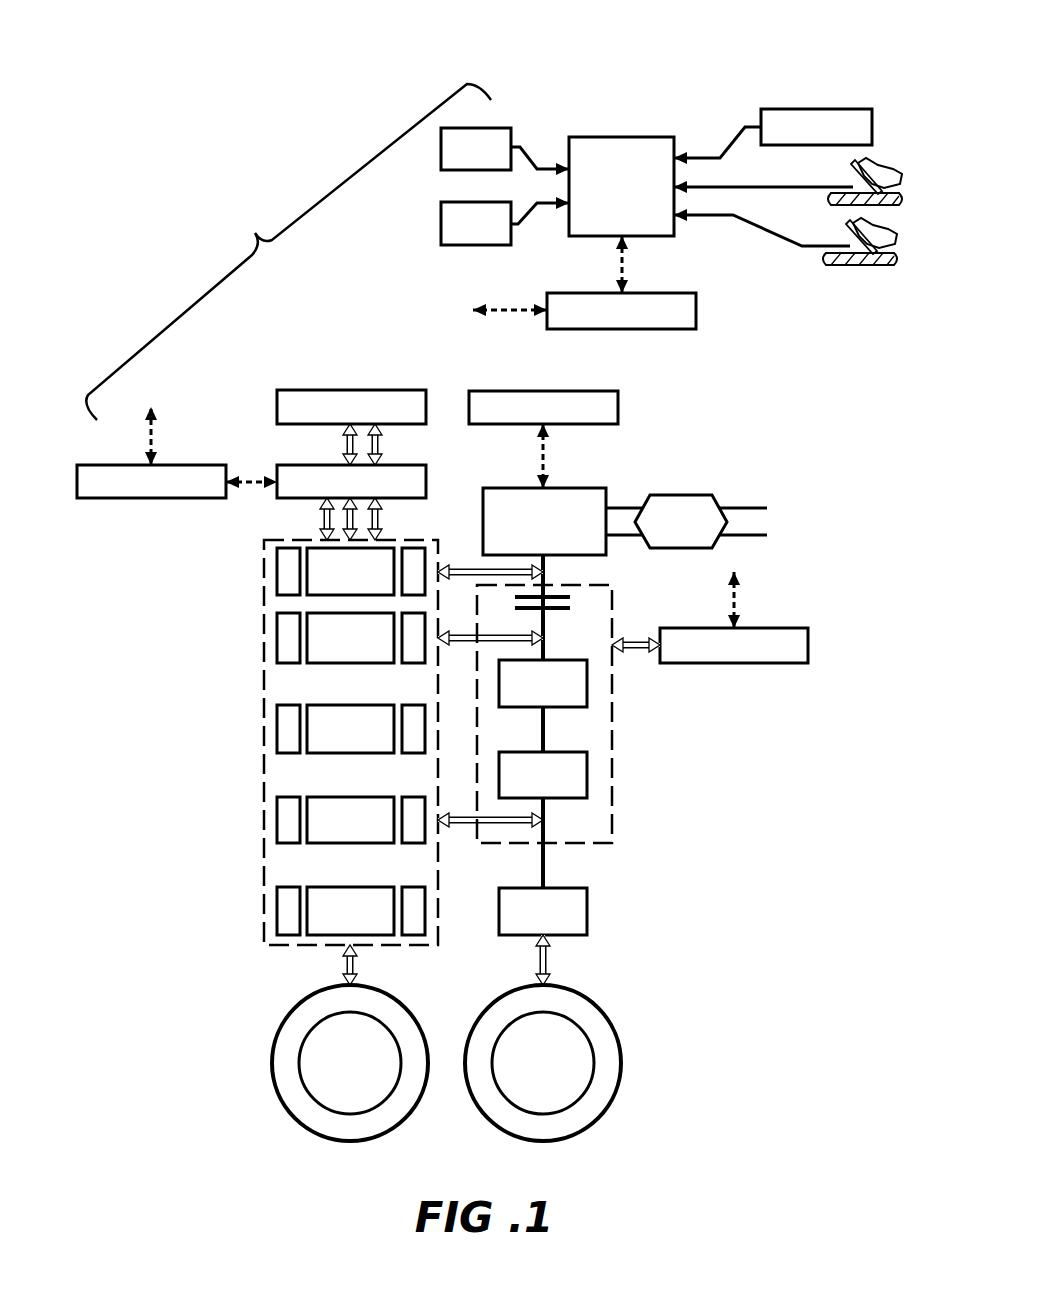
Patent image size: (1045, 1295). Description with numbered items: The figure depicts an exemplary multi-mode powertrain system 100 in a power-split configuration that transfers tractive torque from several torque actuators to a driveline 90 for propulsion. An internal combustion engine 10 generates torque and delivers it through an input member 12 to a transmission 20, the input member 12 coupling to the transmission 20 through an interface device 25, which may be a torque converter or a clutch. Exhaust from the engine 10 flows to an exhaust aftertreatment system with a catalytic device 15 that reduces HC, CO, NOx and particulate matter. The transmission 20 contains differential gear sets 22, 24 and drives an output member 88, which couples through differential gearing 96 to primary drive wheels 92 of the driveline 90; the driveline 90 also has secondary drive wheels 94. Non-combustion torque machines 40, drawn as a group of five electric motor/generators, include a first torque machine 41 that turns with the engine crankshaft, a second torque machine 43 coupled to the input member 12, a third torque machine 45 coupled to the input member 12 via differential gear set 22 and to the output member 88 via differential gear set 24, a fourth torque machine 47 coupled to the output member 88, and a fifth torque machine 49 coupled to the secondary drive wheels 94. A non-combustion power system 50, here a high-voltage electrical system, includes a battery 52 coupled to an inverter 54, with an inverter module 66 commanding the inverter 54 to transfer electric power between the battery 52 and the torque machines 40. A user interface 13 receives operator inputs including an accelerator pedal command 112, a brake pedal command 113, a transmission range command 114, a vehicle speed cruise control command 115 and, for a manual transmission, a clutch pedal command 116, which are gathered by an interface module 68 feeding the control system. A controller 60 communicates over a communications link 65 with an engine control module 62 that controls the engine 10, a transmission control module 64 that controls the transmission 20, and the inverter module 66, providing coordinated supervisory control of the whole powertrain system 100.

The multi-mode powertrain system 100 is at (223, 205).
The user interface 13 is at (826, 80).
The transmission range command 114 is at (792, 141).
The brake pedal command 113 is at (788, 176).
The accelerator pedal command 112 is at (785, 233).
The vehicle speed cruise control command 115 is at (452, 162).
The clutch pedal command 116 is at (452, 237).
The operator interface module 68 is at (606, 200).
The communications link 65 is at (586, 277).
The controller 60 is at (606, 325).
The non-combustion power system 50 is at (267, 408).
The high-voltage electrical energy storage device 52 is at (335, 421).
The inverter 54 is at (335, 495).
The inverter module 66 is at (135, 495).
The engine control module 62 is at (527, 422).
The internal combustion engine 10 is at (529, 535).
The catalytic device 15 is at (665, 535).
The input member 12 is at (548, 563).
The interface device 25 is at (556, 616).
The transmission control module 64 is at (718, 659).
The non-combustion torque machine 40 is at (264, 590).
The first torque machine 41 is at (335, 585).
The second torque machine 43 is at (335, 652).
The third torque machine 45 is at (335, 743).
The fourth torque machine 47 is at (335, 834).
The fifth torque machine 49 is at (335, 925).
The transmission 20 is at (612, 737).
The differential gear set 22 is at (527, 697).
The differential gear set 24 is at (527, 789).
The output member 88 is at (545, 878).
The differential gearing 96 is at (527, 925).
The driveline 90 is at (642, 943).
The secondary drive wheels 94 is at (334, 1076).
The primary drive wheels 92 is at (527, 1076).